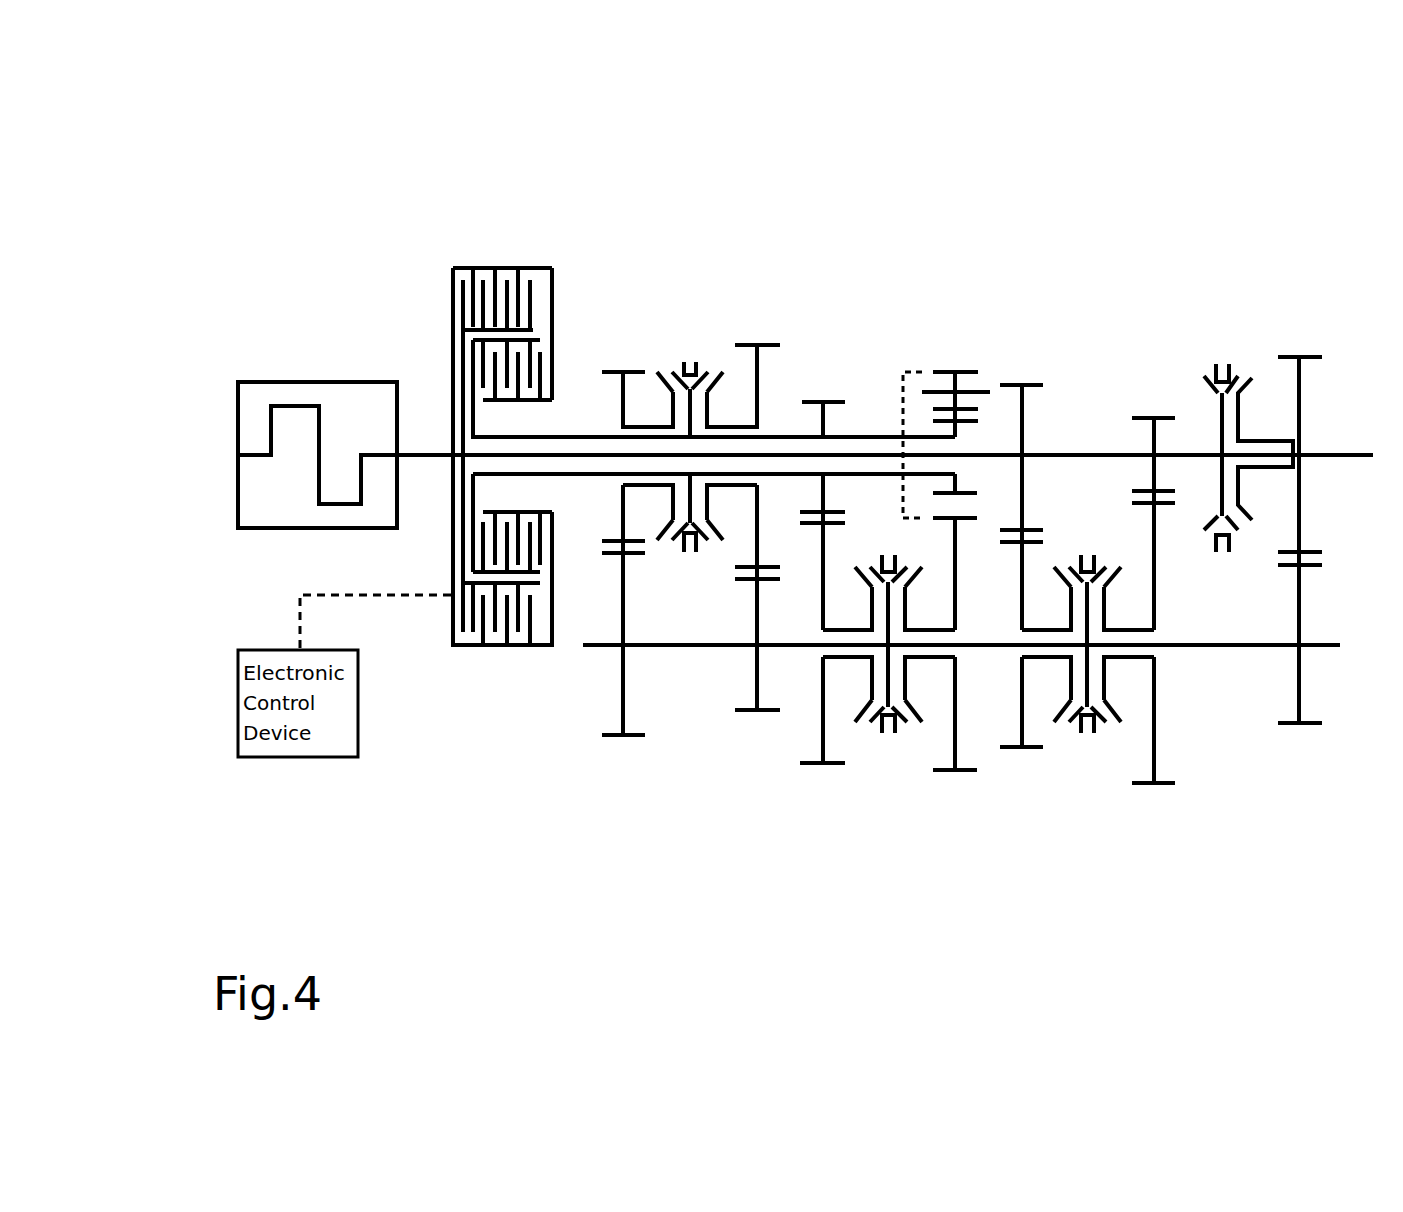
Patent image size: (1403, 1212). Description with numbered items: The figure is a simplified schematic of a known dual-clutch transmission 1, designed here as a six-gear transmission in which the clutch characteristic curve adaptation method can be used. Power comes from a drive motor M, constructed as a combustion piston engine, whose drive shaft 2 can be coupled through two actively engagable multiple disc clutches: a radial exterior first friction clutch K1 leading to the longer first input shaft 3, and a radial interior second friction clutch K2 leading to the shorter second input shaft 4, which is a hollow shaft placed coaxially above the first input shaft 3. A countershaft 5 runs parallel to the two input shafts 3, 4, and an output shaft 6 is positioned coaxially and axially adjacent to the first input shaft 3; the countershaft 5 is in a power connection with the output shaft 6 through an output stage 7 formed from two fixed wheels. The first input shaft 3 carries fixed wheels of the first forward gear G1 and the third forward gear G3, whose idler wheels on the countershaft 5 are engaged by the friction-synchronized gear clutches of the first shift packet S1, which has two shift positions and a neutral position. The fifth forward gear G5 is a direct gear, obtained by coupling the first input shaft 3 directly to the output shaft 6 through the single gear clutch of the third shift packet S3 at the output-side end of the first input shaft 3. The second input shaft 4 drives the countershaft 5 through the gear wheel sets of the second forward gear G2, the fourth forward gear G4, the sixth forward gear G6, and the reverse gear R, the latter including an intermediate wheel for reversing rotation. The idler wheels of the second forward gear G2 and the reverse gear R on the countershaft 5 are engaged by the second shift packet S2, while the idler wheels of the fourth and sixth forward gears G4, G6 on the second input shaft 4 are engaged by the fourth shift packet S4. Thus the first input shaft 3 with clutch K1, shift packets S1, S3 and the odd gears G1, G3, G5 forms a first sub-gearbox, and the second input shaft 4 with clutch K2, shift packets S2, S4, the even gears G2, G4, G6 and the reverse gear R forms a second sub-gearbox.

The dual-clutch transmission 1 is at (356, 818).
The drive shaft 2 is at (425, 458).
The first input shaft 3 is at (1071, 452).
The second input shaft 4 is at (582, 477).
The countershaft 5 is at (1233, 648).
The output shaft 6 is at (1339, 453).
The output stage 7 is at (1297, 729).
The drive motor M is at (318, 380).
The first friction clutch K1 is at (440, 272).
The second friction clutch K2 is at (568, 347).
The first shift packet S1 is at (1087, 749).
The second shift packet S2 is at (888, 748).
The third shift packet S3 is at (1222, 354).
The fourth shift packet S4 is at (690, 351).
The first forward gear G1 is at (1154, 407).
The second forward gear G2 is at (823, 391).
The third forward gear G3 is at (1022, 374).
The fourth forward gear G4 is at (623, 746).
The fifth forward gear G5 is at (1246, 351).
The sixth forward gear G6 is at (757, 719).
The reverse gear R is at (957, 361).